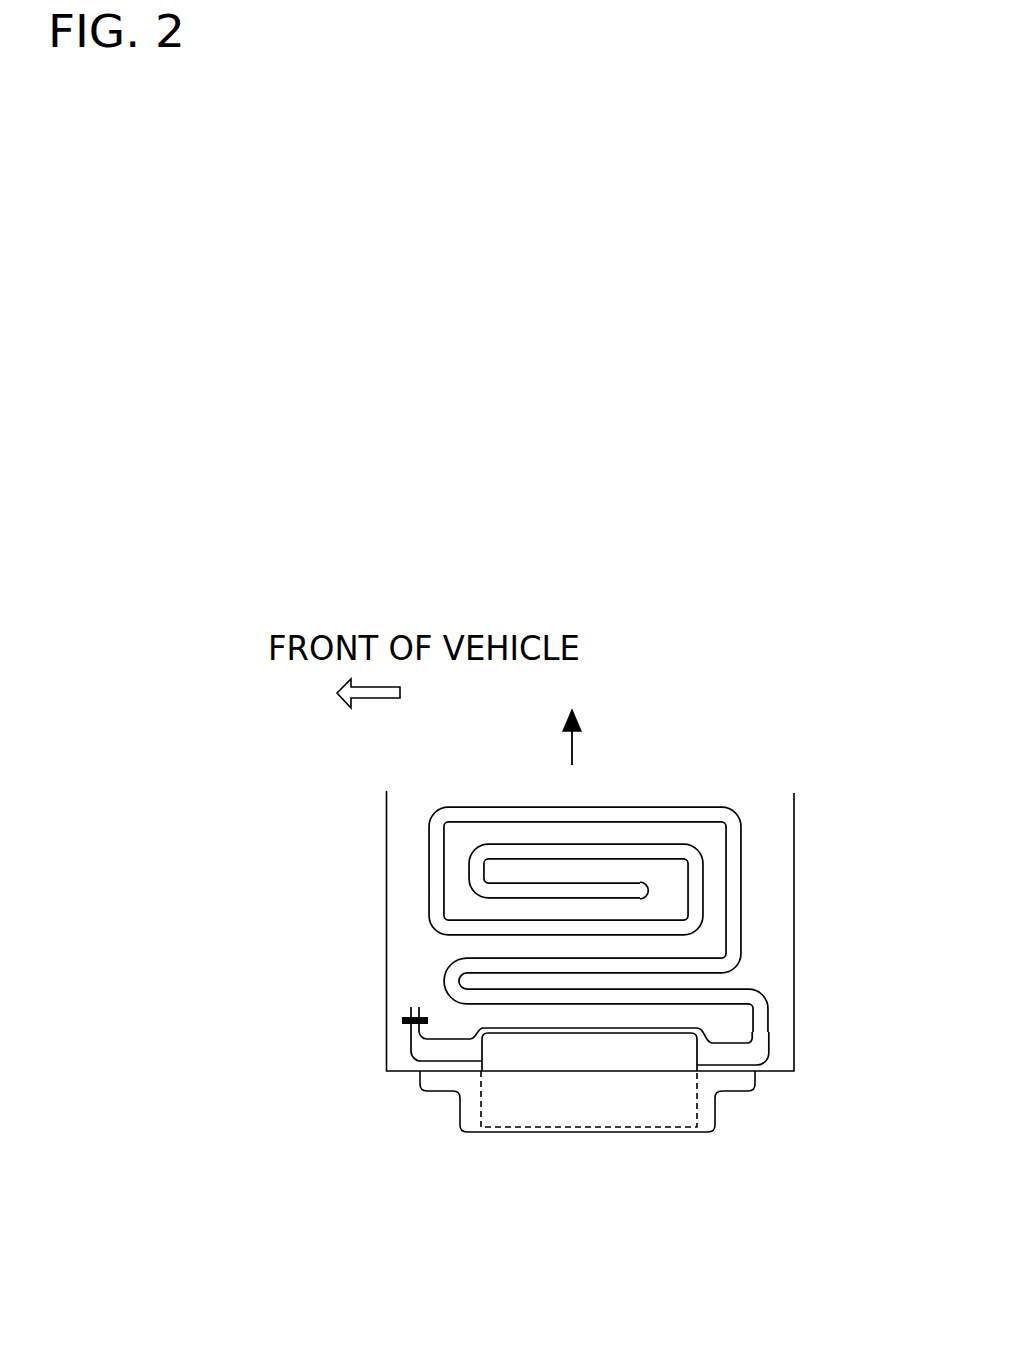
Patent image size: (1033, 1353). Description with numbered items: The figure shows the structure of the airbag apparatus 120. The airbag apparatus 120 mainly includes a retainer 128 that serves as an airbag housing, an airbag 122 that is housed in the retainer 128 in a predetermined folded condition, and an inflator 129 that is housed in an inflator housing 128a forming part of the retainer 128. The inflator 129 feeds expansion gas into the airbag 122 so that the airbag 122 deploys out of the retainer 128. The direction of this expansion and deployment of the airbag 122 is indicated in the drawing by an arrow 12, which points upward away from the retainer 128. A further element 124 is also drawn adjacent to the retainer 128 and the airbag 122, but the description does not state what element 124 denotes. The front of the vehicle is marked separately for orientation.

The vehicle upward direction / body side 12 is at (597, 738).
The cooling unit assembly 120 is at (651, 921).
The serpentine cooling pipe 122 is at (750, 880).
The pipe connector block 124 is at (770, 1037).
The cooling plate panel 128 is at (797, 962).
The protruding portion of cooling plate 128a is at (717, 1110).
The recess / opening in protruding portion 129 is at (482, 1090).